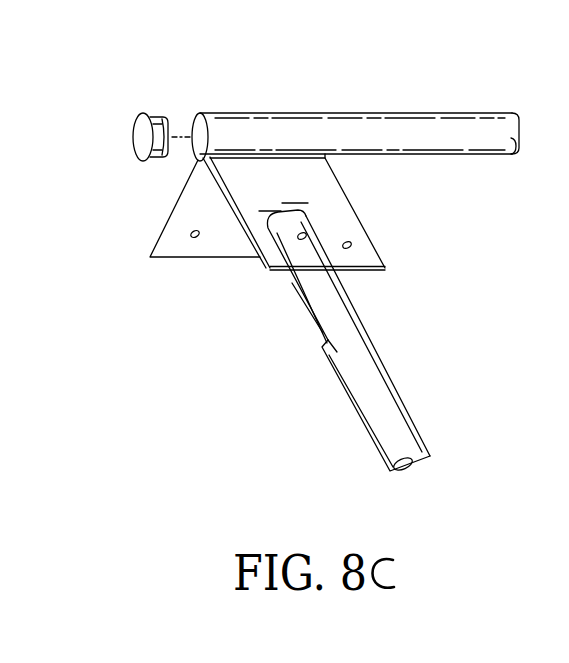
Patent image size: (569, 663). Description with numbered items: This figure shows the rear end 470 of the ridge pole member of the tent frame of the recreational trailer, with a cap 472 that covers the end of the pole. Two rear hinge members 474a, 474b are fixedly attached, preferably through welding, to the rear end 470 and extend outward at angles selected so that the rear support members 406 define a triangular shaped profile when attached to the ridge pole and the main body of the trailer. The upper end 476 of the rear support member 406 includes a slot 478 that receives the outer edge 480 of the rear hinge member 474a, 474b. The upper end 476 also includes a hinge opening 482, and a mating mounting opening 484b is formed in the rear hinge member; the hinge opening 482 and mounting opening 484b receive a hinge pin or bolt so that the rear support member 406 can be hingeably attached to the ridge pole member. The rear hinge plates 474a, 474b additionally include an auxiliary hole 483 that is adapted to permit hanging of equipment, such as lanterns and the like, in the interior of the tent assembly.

The rear support member 406 is at (405, 351).
The rear end 470 is at (233, 112).
The cap 472 is at (143, 112).
The rear hinge member 474a is at (342, 212).
The rear hinge member 474b is at (172, 210).
The upper end 476 is at (315, 371).
The slot 478 is at (305, 308).
The outer edge 480 is at (368, 271).
The hinge opening 482 is at (298, 238).
The auxiliary hole 483 is at (351, 245).
The mounting opening 484b is at (193, 243).